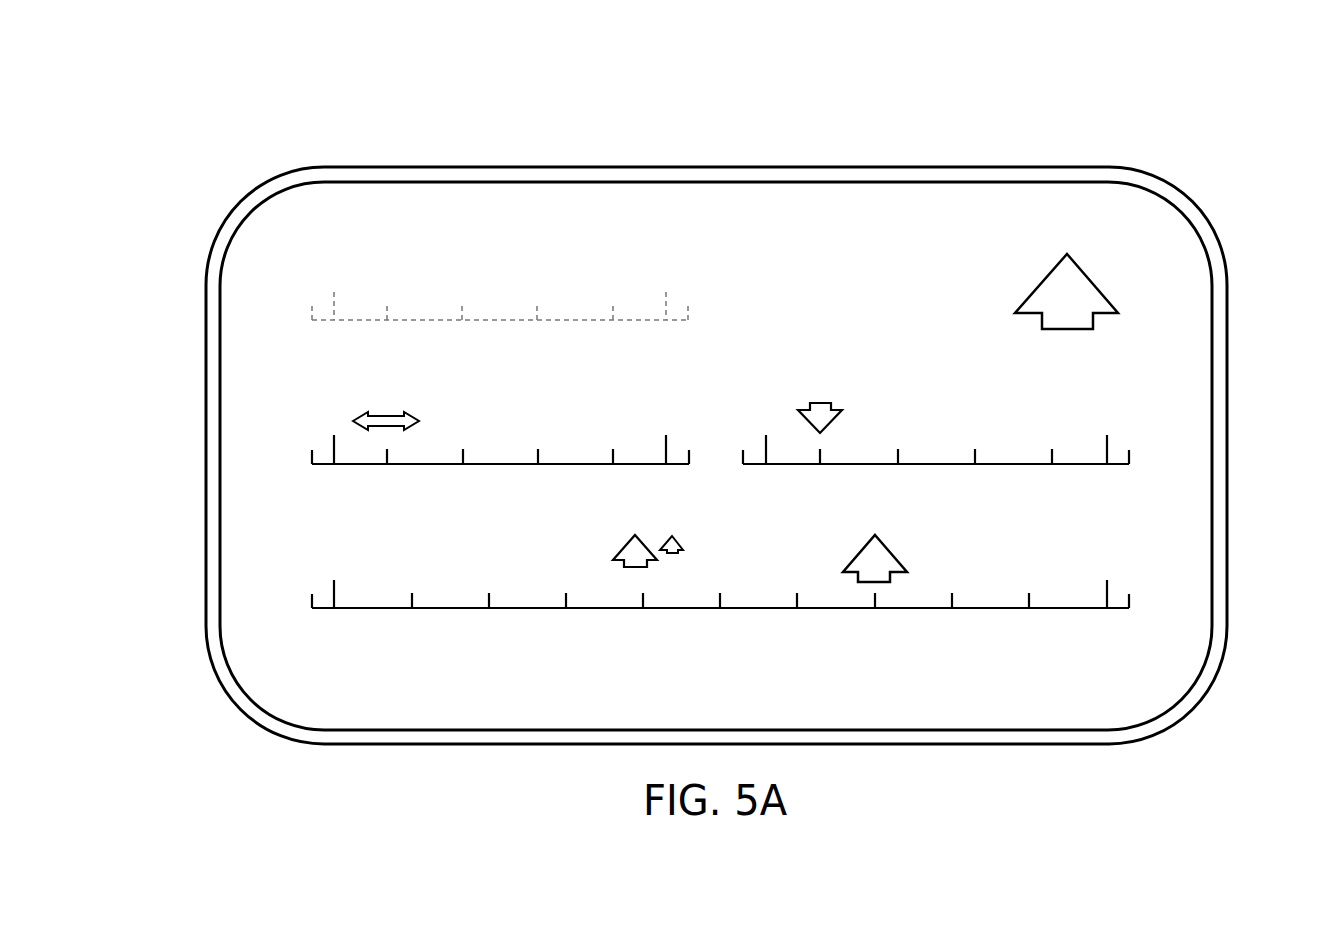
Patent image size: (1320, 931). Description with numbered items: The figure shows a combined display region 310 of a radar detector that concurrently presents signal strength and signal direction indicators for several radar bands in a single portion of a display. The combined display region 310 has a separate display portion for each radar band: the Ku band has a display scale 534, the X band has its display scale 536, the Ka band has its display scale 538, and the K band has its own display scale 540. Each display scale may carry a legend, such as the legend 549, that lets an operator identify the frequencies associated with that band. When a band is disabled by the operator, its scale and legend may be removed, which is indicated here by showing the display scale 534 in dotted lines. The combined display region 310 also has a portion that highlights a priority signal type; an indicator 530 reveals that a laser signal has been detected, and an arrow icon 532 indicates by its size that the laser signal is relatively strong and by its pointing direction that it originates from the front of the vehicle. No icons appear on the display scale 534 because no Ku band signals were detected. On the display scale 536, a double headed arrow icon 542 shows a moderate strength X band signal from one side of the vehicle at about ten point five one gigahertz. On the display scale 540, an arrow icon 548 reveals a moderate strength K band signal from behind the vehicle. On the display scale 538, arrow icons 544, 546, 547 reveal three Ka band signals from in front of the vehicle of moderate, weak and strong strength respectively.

The combined display region 310 is at (425, 136).
The indicator 530 is at (840, 283).
The arrow icon 532 is at (1043, 280).
The display scale 534 is at (277, 313).
The display scale 536 is at (287, 462).
The display scale 538 is at (280, 605).
The display scale 540 is at (1138, 453).
The double headed arrow icon 542 is at (390, 412).
The arrow icon 544 is at (618, 553).
The arrow icon 546 is at (682, 540).
The arrow icon 547 is at (890, 553).
The arrow icon 548 is at (838, 403).
The legend 549 is at (340, 642).